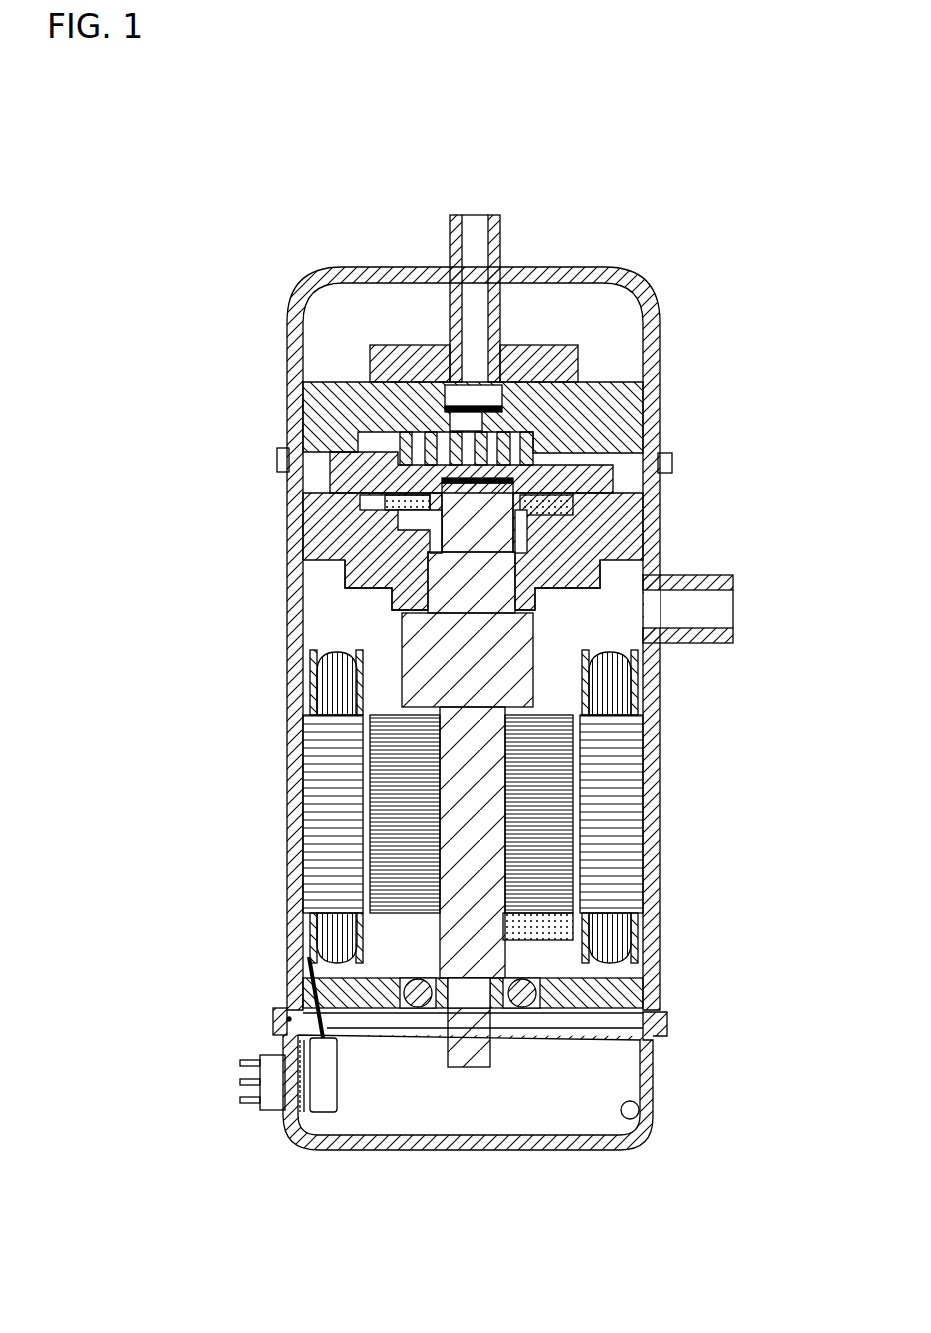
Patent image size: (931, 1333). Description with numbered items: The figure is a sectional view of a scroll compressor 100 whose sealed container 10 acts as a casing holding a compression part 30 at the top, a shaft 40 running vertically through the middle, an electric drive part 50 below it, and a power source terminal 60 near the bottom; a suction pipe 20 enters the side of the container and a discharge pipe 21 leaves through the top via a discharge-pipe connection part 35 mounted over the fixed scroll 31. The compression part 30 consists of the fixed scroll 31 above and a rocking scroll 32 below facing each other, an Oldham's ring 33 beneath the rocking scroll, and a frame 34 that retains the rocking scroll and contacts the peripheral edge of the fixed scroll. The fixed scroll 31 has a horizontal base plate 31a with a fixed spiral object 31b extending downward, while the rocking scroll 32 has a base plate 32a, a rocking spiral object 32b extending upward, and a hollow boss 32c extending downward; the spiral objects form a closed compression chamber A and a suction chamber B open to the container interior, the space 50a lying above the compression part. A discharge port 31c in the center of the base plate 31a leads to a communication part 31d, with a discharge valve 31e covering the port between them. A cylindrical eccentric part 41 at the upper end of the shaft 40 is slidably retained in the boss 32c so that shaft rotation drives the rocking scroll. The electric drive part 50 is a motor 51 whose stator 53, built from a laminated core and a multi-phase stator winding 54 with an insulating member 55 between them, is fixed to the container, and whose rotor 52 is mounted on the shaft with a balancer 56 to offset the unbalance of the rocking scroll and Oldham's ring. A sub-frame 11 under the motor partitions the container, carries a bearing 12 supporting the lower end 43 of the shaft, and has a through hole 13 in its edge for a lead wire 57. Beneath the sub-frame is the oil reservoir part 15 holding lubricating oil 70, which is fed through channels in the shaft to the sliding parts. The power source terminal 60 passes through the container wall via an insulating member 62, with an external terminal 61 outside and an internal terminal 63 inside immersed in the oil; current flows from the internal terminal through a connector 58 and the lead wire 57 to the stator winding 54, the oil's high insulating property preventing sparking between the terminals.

The compressor 100 is at (838, 176).
The sealed container 10 is at (660, 333).
The compression part 30 is at (185, 318).
The discharge-pipe connection part 35 is at (533, 345).
The discharge pipe 21 is at (500, 232).
The fixed scroll 31 is at (330, 445).
The base plate 31a is at (330, 420).
The fixed spiral object 31b is at (330, 385).
The discharge port 31c is at (505, 400).
The communication part 31d is at (470, 400).
The discharge valve 31e is at (484, 402).
The upper space 50a is at (450, 322).
The rocking scroll 32 is at (350, 495).
The base plate 32a is at (345, 470).
The rocking spiral object 32b is at (540, 440).
The boss 32c is at (350, 535).
The Oldham's ring 33 is at (575, 505).
The frame 34 is at (355, 572).
The eccentric part 41 is at (625, 530).
The compression chamber A is at (672, 452).
The suction chamber B is at (277, 443).
The shaft 40 is at (487, 781).
The shaft lower end 43 is at (468, 1052).
The suction pipe 20 is at (722, 608).
The electric drive part 50 is at (183, 625).
The motor 51 is at (225, 742).
The rotor 52 is at (330, 759).
The stator 53 is at (335, 800).
The stator winding 54 is at (335, 652).
The insulating member 55 is at (322, 682).
The balancer 56 is at (540, 933).
The sub-frame 11 is at (610, 994).
The bearing 12 is at (419, 1012).
The through hole 13 is at (310, 992).
The oil reservoir part 15 is at (640, 1110).
The lubricating oil 70 is at (570, 1068).
The power source terminal 60 is at (262, 1112).
The external terminal 61 is at (240, 1098).
The connector 58 is at (323, 1112).
The lead wire 57 is at (288, 1019).
The insulating member 62 is at (290, 1140).
The internal terminal 63 is at (300, 1118).